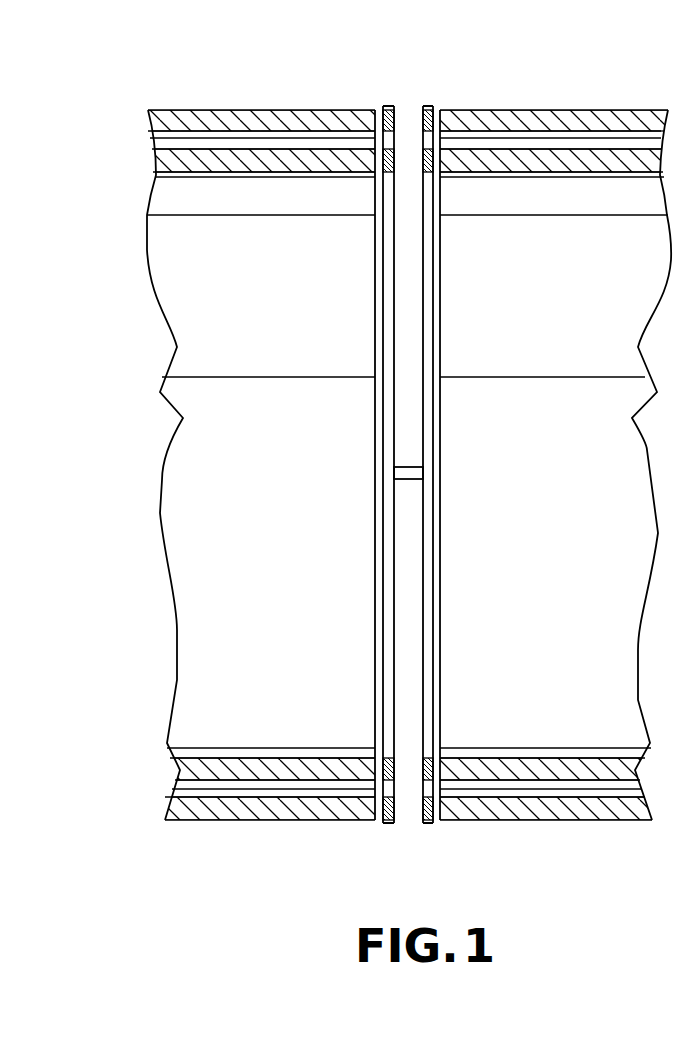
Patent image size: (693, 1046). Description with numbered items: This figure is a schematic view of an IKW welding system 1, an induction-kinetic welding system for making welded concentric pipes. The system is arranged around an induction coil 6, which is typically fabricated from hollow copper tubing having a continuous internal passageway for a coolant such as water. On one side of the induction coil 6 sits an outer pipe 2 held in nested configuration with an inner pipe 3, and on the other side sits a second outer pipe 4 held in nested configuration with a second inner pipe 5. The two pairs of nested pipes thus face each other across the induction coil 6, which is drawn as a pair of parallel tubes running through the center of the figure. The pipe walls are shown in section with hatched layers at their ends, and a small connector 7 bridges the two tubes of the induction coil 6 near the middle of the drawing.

The IKW welding system 1 is at (368, 85).
The outer pipe 2 is at (210, 110).
The inner pipe 3 is at (215, 174).
The second outer pipe 4 is at (578, 110).
The second inner pipe 5 is at (568, 174).
The induction coil 6 is at (429, 826).
The connecting bridge 7 is at (407, 465).